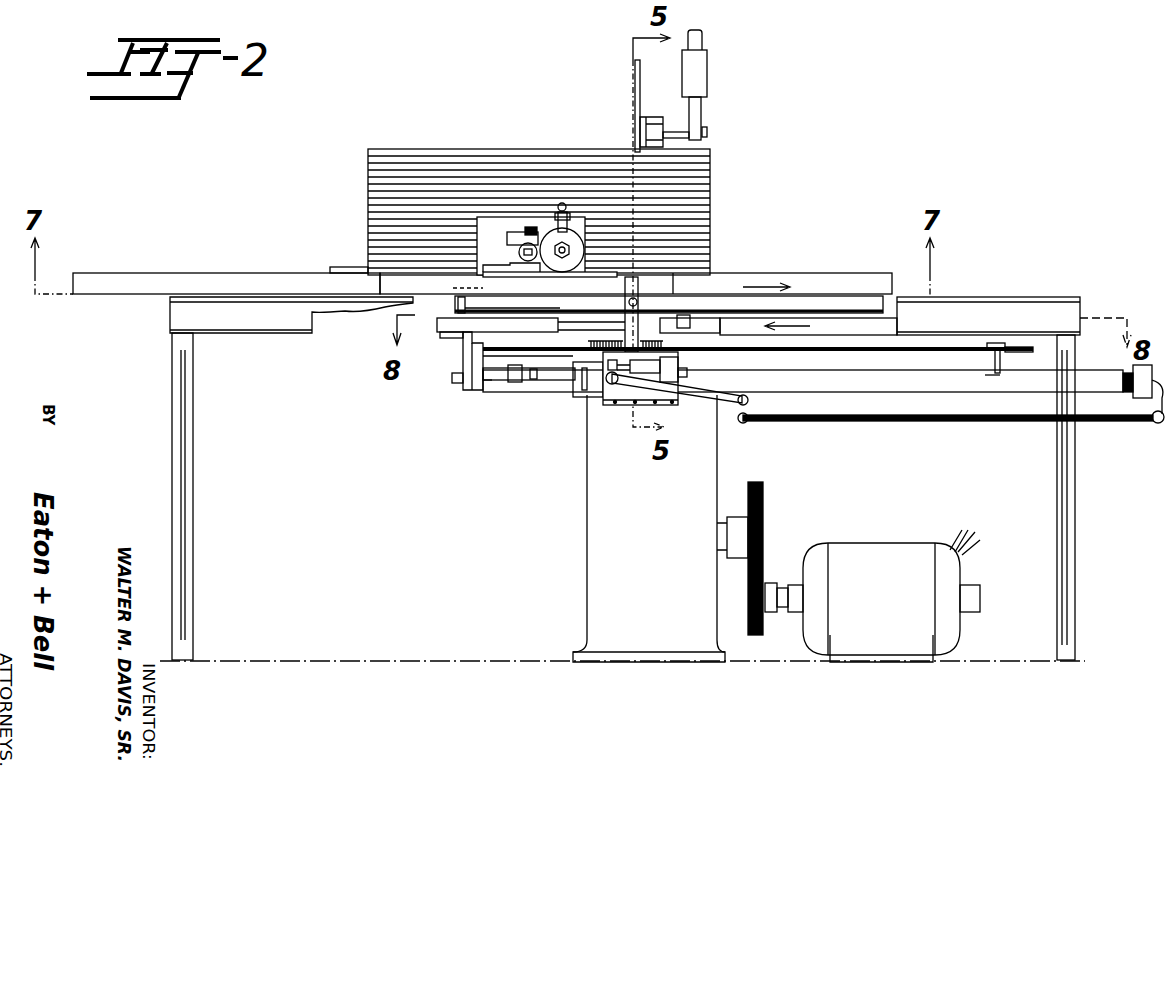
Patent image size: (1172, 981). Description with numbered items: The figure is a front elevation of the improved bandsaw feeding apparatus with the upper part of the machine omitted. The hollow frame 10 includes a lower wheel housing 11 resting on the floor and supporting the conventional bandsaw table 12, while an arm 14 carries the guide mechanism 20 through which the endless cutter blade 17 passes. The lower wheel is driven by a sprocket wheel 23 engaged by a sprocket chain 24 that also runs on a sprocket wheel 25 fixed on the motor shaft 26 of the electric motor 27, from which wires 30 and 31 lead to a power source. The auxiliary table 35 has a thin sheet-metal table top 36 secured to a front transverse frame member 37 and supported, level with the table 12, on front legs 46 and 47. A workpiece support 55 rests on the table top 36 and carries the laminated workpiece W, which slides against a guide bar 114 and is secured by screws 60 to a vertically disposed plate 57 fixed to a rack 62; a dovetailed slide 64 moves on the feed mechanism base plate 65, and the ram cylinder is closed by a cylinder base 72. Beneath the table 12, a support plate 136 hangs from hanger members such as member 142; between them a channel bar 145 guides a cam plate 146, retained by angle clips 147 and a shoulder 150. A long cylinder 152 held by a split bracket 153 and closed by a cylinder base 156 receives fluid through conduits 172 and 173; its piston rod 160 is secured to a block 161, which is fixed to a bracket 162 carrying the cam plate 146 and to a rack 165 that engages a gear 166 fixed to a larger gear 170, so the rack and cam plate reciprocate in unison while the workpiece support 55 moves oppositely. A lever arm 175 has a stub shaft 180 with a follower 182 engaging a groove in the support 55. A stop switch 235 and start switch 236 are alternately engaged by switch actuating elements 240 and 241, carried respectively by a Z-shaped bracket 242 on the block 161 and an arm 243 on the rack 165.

The workpiece W is at (368, 164).
The hollow frame 10 is at (576, 638).
The lower wheel housing 11 is at (587, 583).
The bandsaw table 12 is at (856, 280).
The arm 14 is at (707, 68).
The endless cutter blade 17 is at (633, 66).
The guide mechanism 20 is at (698, 127).
The sprocket wheel 23 is at (763, 494).
The sprocket chain 24 is at (763, 528).
The sprocket wheel 25 is at (763, 639).
The motor shaft 26 is at (780, 590).
The electric motor 27 is at (876, 548).
The wire 30 is at (952, 532).
The wire 31 is at (968, 544).
The auxiliary table 35 is at (160, 331).
The auxiliary table top 36 is at (226, 290).
The front transverse frame member 37 is at (258, 332).
The front leg 46 is at (1075, 535).
The front leg 47 is at (190, 507).
The workpiece support 55 is at (113, 261).
The vertically disposed plate 57 is at (468, 237).
The screws 60 is at (492, 250).
The rack 62 is at (518, 257).
The dovetailed slide 64 is at (525, 273).
The feed mechanism base plate 65 is at (604, 276).
The cylinder base 72 is at (575, 271).
The guide bar 114 is at (338, 267).
The support plate 136 is at (665, 358).
The hanger member 142 is at (620, 313).
The channel bar 145 is at (560, 331).
The cam plate 146 is at (845, 327).
The angle clips 147 is at (683, 309).
The shoulder 150 is at (638, 304).
The cylinder 152 is at (835, 392).
The split bracket 153 is at (627, 406).
The cylinder base 156 is at (1132, 396).
The piston rod 160 is at (452, 377).
The block 161 is at (478, 390).
The bracket 162 is at (463, 356).
The rack 165 is at (905, 352).
The gear 166 is at (738, 352).
The gear 170 is at (690, 335).
The conduit 172 is at (934, 421).
The conduit 173 is at (712, 405).
The lever arm 175 is at (501, 303).
The stub shaft 180 is at (458, 304).
The follower 182 is at (489, 286).
The stop switch 235 is at (584, 361).
The start switch 236 is at (690, 374).
The switch actuating element 240 is at (526, 382).
The switch actuating element 241 is at (982, 382).
The Z-shaped bracket 242 is at (504, 384).
The arm 243 is at (1000, 370).